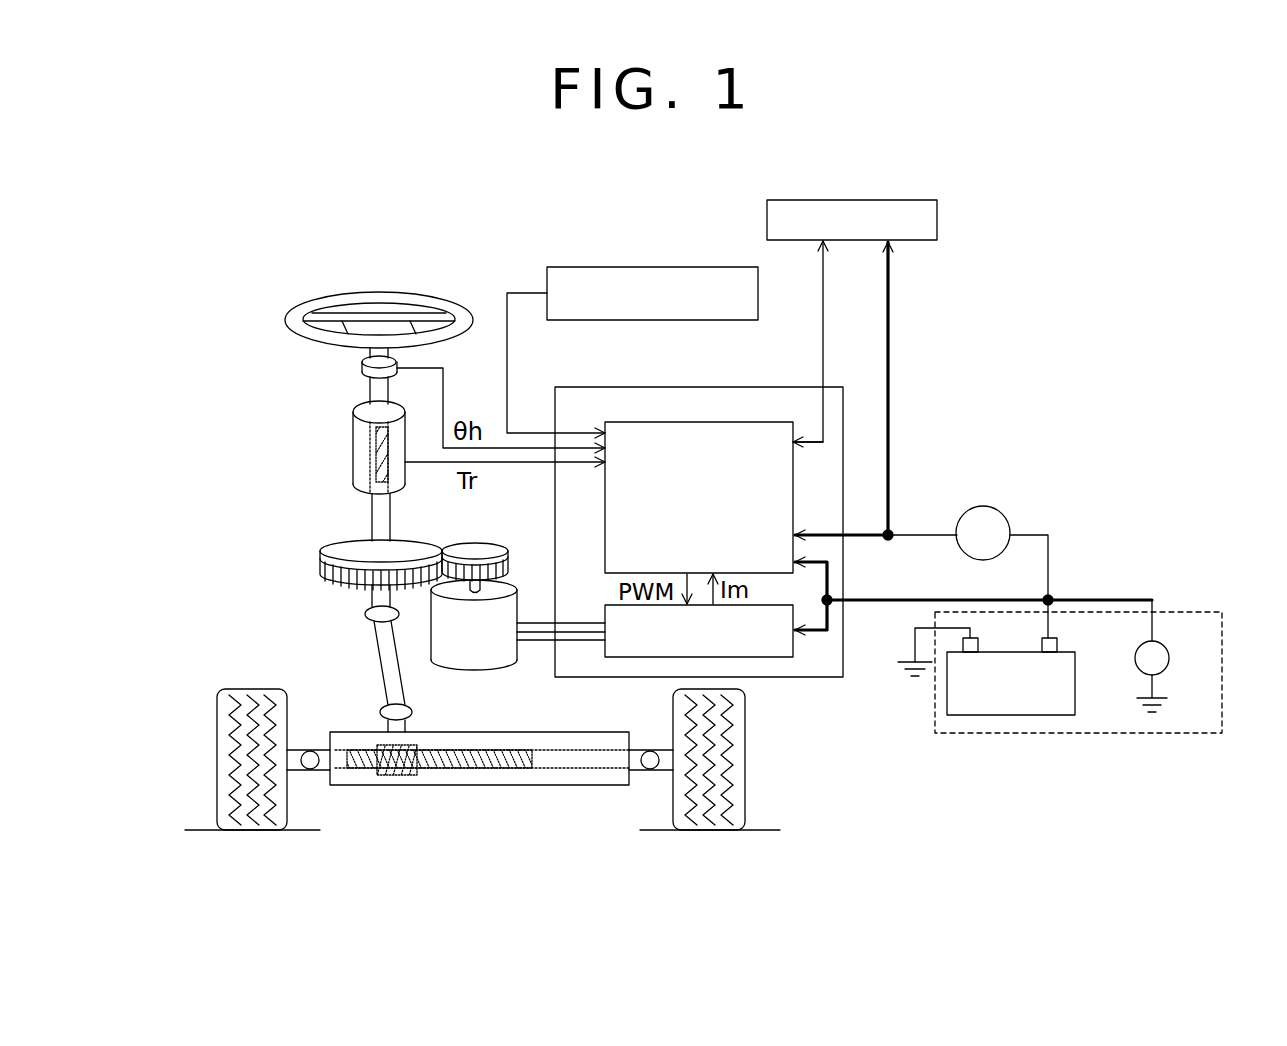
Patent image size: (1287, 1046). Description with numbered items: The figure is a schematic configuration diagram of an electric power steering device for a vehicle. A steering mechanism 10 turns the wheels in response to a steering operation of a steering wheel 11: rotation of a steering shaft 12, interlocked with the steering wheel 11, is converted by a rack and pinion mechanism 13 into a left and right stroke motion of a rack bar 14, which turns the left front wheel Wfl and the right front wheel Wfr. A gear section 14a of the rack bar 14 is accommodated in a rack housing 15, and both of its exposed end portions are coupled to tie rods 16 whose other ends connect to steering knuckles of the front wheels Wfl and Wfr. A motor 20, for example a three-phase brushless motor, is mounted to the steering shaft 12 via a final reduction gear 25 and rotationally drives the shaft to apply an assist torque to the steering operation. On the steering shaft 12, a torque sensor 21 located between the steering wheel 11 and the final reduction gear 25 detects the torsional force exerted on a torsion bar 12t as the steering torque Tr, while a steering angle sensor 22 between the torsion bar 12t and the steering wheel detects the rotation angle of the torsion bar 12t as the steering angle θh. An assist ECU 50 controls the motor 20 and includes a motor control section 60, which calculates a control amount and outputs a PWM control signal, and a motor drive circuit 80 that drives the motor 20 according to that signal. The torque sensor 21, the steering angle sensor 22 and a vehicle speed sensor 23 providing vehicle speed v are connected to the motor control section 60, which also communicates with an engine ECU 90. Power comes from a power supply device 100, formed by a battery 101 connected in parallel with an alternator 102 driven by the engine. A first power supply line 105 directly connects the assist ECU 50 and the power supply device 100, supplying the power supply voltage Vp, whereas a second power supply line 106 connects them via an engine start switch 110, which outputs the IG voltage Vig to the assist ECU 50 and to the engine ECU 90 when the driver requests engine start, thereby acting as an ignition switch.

The steering mechanism 10 is at (293, 528).
The steering wheel 11 is at (402, 292).
The steering shaft 12 is at (372, 513).
The torsion bar 12t is at (372, 437).
The rack and pinion mechanism 13 is at (421, 778).
The rack bar 14 is at (517, 773).
The gear section 14a is at (473, 773).
The rack housing 15 is at (562, 787).
The tie rods 16 is at (295, 773).
The motor 20 is at (470, 672).
The torque sensor 21 is at (353, 462).
The steering angle sensor 22 is at (362, 365).
The vehicle speed sensor 23 is at (653, 265).
The final reduction gear 25 is at (416, 540).
The assist ECU 50 is at (695, 385).
The motor control section 60 is at (815, 488).
The motor drive circuit 80 is at (752, 604).
The engine ECU 90 is at (849, 199).
The power supply device 100 is at (1178, 611).
The battery 101 is at (1070, 652).
The alternator 102 is at (1156, 641).
The first power supply line 105 is at (913, 595).
The second power supply line 106 is at (908, 530).
The engine start switch 110 is at (983, 507).
The left front wheel Wfl is at (217, 735).
The right front wheel Wfr is at (745, 725).